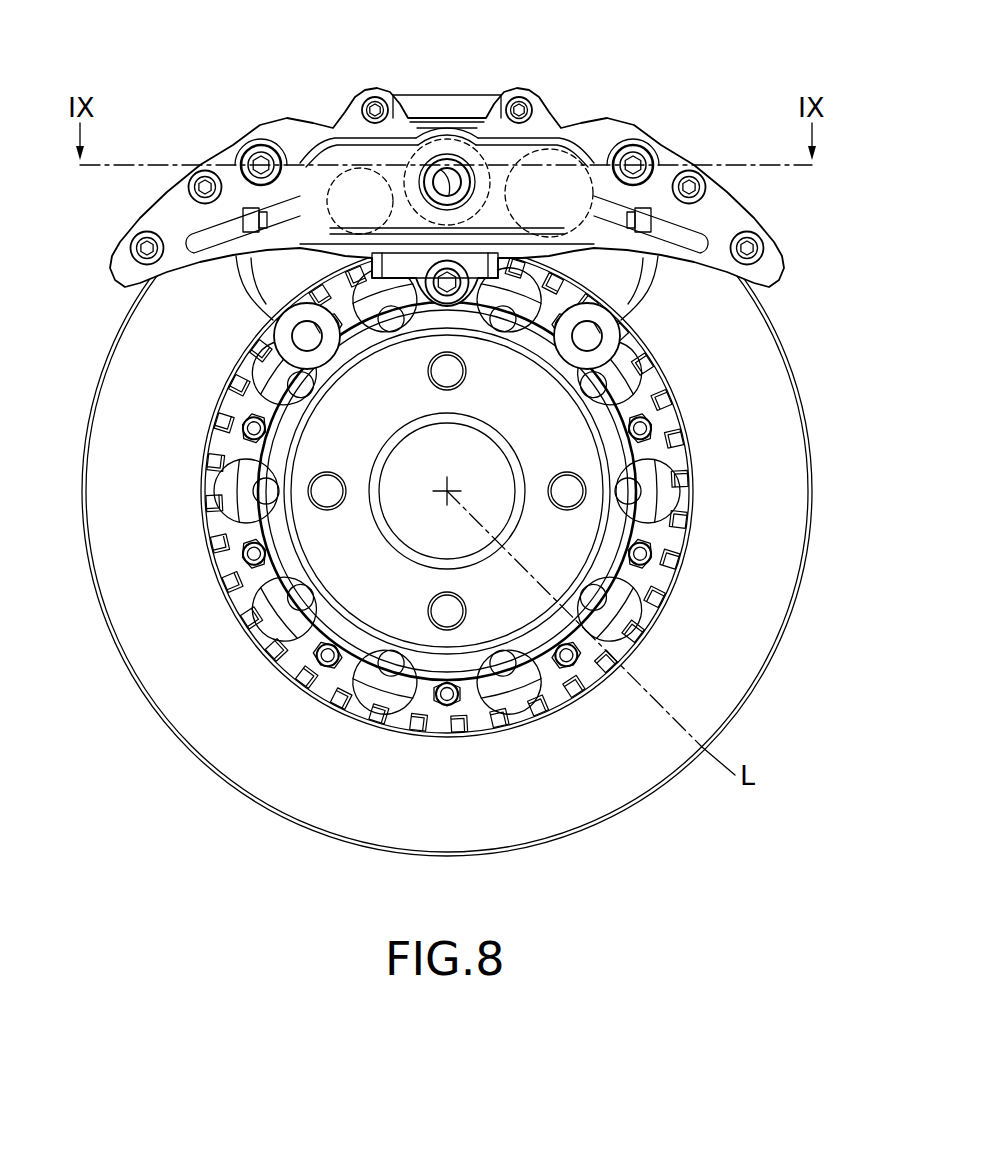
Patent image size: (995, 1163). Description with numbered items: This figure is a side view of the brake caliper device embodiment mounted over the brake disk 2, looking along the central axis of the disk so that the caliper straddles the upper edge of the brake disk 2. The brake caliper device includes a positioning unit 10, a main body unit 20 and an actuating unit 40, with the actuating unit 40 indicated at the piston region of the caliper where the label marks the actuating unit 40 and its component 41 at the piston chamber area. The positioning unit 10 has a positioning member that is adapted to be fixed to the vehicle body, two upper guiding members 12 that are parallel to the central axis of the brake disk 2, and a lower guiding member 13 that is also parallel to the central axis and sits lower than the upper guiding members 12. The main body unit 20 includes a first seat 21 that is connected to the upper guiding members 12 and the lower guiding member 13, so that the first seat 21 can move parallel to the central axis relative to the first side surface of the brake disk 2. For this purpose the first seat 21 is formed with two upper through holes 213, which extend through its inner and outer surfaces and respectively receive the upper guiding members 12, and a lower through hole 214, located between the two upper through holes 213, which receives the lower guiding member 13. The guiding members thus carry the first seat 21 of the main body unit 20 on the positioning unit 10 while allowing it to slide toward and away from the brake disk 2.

The brake disk 2 is at (742, 677).
The positioning unit 10 is at (640, 308).
The upper guiding members 12 is at (253, 147).
The lower guiding member 13 is at (447, 278).
The main body unit 20 is at (447, 162).
The first seat 21 is at (203, 161).
The actuating unit 40 is at (358, 170).
The piston 41 is at (549, 193).
The upper through holes 213 is at (272, 125).
The lower through hole 214 is at (462, 278).